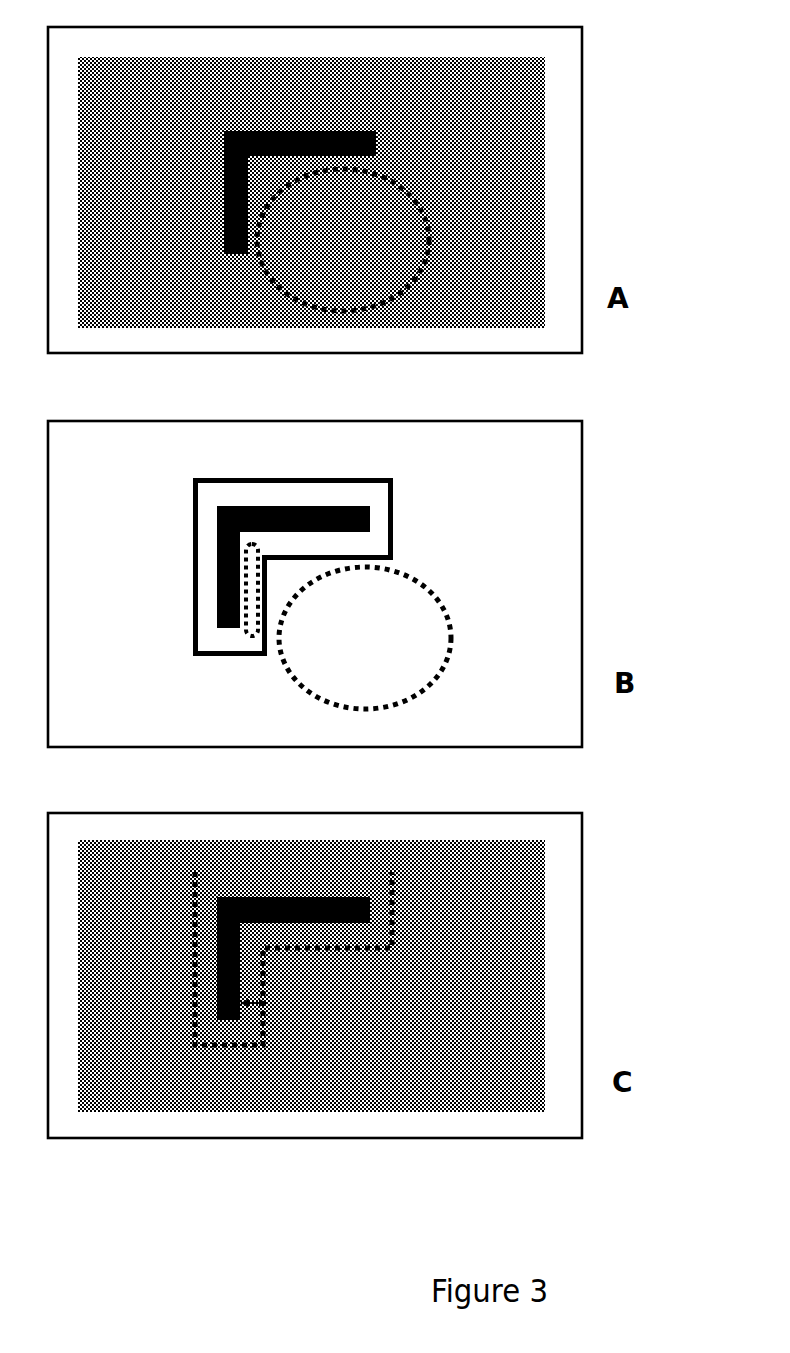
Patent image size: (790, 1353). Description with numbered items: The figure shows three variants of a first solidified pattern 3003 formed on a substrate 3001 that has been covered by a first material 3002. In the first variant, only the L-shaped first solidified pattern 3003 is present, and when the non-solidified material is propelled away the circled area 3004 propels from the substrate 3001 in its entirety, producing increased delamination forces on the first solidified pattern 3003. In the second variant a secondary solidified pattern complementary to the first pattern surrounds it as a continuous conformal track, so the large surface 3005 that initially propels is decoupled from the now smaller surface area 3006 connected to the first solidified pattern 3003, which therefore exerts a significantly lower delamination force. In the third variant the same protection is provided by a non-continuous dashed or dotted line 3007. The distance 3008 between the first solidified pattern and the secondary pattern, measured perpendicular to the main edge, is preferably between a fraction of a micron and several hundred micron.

The substrate 3001 is at (369, 582).
The first material 3002 is at (385, 584).
The first solidified pattern 3003 is at (456, 575).
The circled area 3004 is at (477, 439).
The surface 3005 is at (446, 567).
The smaller surface area 3006 is at (472, 604).
The dotted line 3007 is at (445, 958).
The distance 3008 is at (469, 1036).